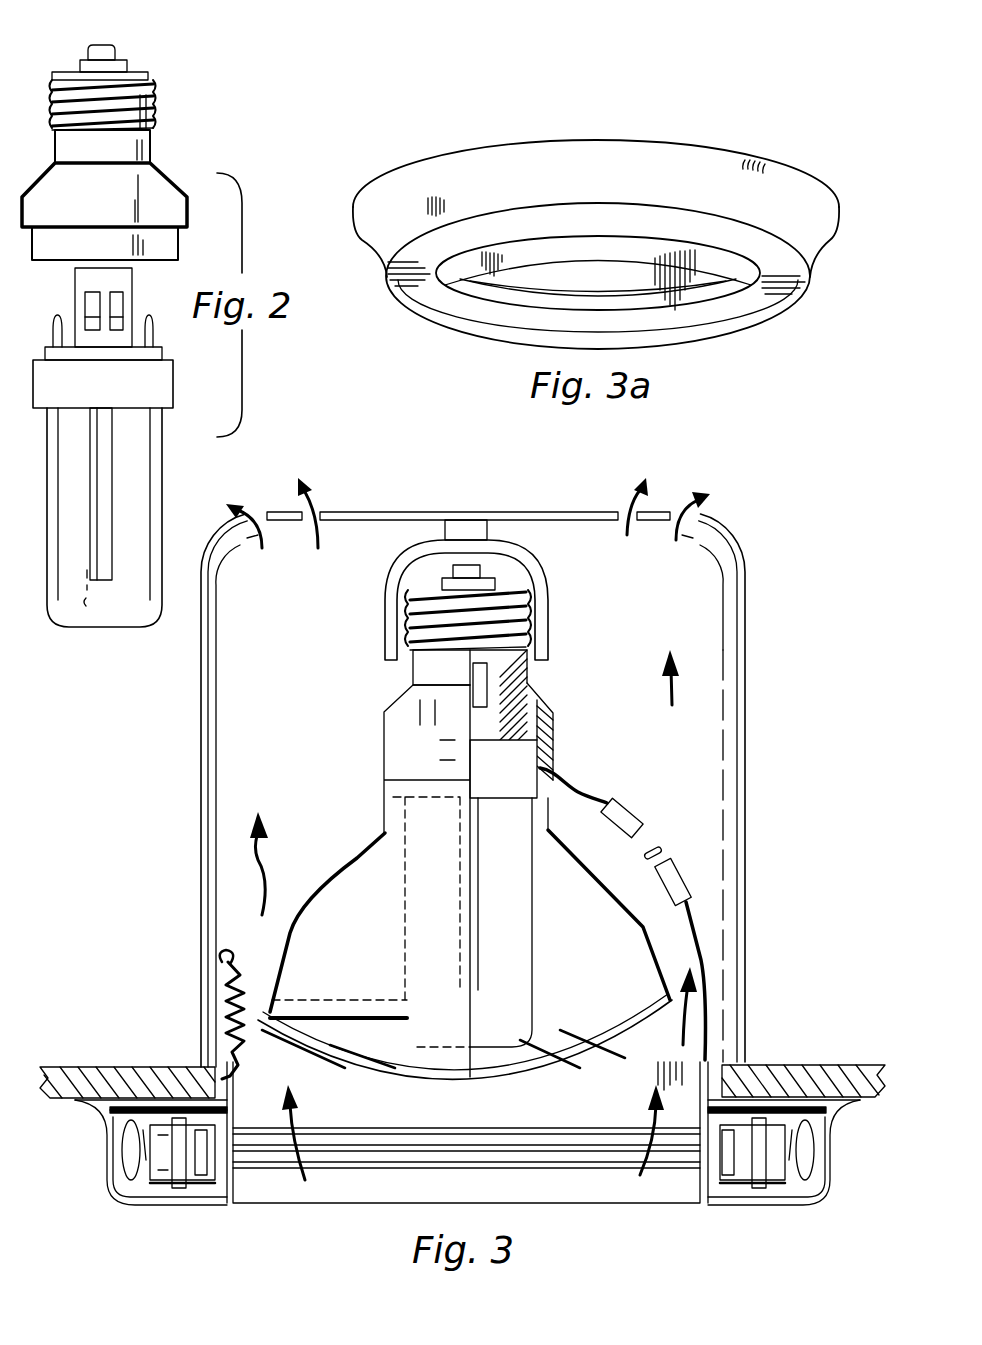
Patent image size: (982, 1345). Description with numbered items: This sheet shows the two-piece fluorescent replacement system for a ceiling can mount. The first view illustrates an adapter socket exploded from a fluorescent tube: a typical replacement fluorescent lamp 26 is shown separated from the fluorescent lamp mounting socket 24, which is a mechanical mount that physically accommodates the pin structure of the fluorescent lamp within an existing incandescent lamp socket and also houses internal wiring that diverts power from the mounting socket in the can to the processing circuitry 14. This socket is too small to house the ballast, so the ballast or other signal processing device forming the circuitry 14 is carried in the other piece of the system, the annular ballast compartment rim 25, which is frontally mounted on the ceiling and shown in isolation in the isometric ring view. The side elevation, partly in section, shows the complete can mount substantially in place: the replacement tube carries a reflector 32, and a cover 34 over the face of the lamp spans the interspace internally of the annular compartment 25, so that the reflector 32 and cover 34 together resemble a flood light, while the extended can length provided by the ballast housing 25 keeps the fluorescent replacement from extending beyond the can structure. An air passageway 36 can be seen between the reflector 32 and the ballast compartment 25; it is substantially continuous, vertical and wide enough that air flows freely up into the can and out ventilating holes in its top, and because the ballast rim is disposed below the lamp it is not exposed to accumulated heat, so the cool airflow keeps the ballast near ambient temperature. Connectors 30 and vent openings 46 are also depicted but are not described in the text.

In FIG. 3, the circuitry 14 is at (172, 1162).
In FIG. 2, the fluorescent lamp mounting socket 24 is at (147, 192).
In FIG. 3, the ballast compartment rim 25 is at (831, 1128).
In FIG. 2, the replacement fluorescent lamp 26 is at (140, 525).
In FIG. 3, the electrical connectors 30 is at (697, 875).
In FIG. 3, the reflector 32 is at (353, 858).
In FIG. 3, the cover 34 is at (565, 1065).
In FIG. 3, the air passageway 36 is at (706, 1000).
In FIG. 3, the vent openings 46 is at (620, 510).